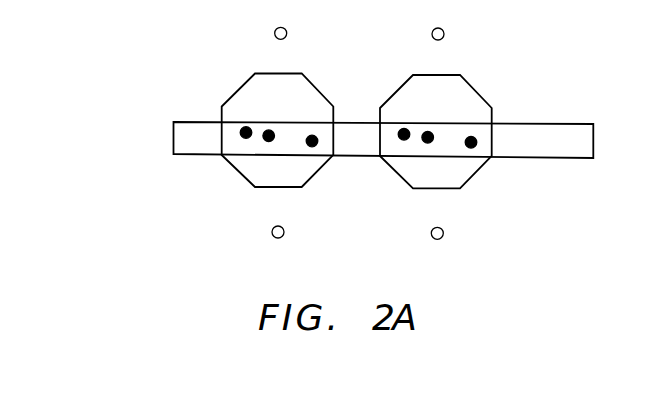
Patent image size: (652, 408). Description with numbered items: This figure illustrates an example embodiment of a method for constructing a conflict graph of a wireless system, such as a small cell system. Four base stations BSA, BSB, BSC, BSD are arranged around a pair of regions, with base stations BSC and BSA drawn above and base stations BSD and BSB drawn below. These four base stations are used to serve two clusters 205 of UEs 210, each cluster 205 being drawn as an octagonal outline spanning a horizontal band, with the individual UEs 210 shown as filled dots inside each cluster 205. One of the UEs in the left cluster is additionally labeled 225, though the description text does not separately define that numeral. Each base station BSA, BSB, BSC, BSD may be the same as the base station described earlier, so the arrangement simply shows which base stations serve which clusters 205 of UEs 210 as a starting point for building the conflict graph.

The cluster 205 is at (500, 192).
The contact pad 225 is at (246, 132).
The UE 210 is at (269, 135).
The base station BSA is at (445, 34).
The base station BSB is at (445, 233).
The base station BSC is at (274, 33).
The base station BSD is at (271, 232).